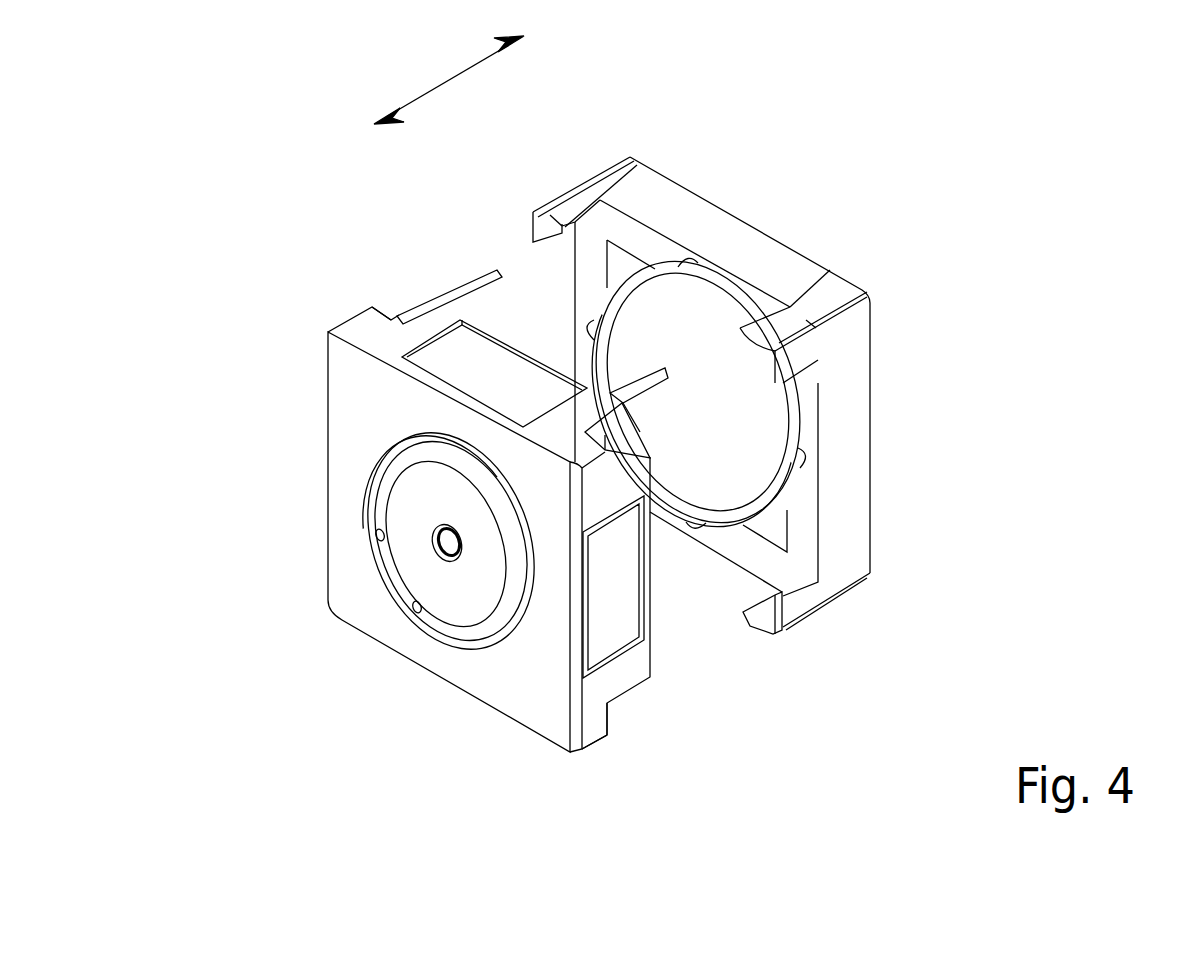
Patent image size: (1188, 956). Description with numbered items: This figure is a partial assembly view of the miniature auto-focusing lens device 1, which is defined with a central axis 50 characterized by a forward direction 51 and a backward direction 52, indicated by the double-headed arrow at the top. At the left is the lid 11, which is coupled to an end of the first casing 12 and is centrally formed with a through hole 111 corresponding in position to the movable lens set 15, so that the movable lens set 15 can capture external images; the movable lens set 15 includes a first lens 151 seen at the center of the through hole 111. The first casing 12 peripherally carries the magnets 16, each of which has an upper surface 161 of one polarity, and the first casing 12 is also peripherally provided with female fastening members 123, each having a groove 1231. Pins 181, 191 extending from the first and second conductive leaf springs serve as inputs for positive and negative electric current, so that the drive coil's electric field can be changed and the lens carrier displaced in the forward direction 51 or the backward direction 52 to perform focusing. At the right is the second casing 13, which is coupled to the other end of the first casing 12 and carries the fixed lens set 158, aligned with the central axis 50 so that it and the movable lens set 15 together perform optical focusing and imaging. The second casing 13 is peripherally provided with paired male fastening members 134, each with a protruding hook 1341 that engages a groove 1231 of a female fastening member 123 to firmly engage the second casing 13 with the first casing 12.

The miniature auto-focusing lens device 1 is at (963, 168).
The lid 11 is at (347, 555).
The through hole 111 is at (380, 460).
The first casing 12 is at (594, 732).
The female fastening members 123 is at (368, 308).
The groove 1231 is at (607, 475).
The second casing 13 is at (853, 486).
The male fastening members 134 is at (632, 172).
The hook 1341 is at (560, 220).
The movable lens set 15 is at (417, 563).
The first lens 151 is at (443, 557).
The fixed lens set 158 is at (763, 408).
The magnets 16 is at (605, 586).
The upper surface 161 is at (473, 368).
The pin 181 is at (476, 288).
The pin 191 is at (630, 400).
The central axis 50 is at (458, 77).
The forward direction 51 is at (400, 118).
The backward direction 52 is at (517, 42).